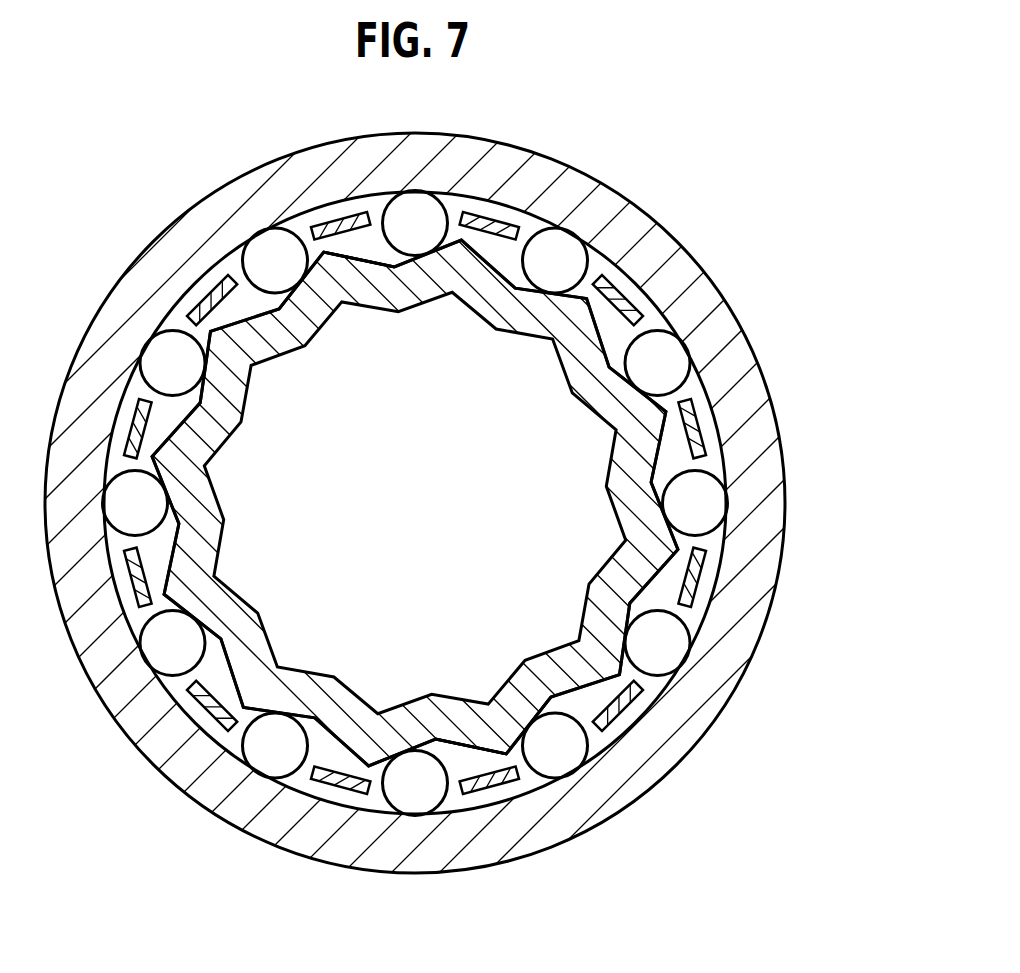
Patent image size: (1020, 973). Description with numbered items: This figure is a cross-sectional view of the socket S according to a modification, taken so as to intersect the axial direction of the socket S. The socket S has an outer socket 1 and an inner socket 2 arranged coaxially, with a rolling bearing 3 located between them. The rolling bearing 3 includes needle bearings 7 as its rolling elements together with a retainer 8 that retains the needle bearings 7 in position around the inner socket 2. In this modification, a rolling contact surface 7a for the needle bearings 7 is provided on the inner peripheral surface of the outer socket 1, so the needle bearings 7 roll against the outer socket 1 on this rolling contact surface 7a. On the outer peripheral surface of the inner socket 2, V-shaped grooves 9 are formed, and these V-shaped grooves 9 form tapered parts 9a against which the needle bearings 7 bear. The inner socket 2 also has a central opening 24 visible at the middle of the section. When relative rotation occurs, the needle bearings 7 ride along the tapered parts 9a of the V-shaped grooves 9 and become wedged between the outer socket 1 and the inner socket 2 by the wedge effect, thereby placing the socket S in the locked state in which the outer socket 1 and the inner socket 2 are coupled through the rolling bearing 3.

The outer socket 1 is at (735, 368).
The inner socket 2 is at (510, 533).
The rolling bearing 3 is at (492, 503).
The needle bearings 7 is at (696, 505).
The rolling contact surface 7a is at (705, 445).
The retainer 8 is at (700, 580).
The V-shaped grooves 9 is at (614, 343).
The tapered parts 9a is at (360, 263).
The bore 24 is at (258, 527).
The socket S is at (660, 171).